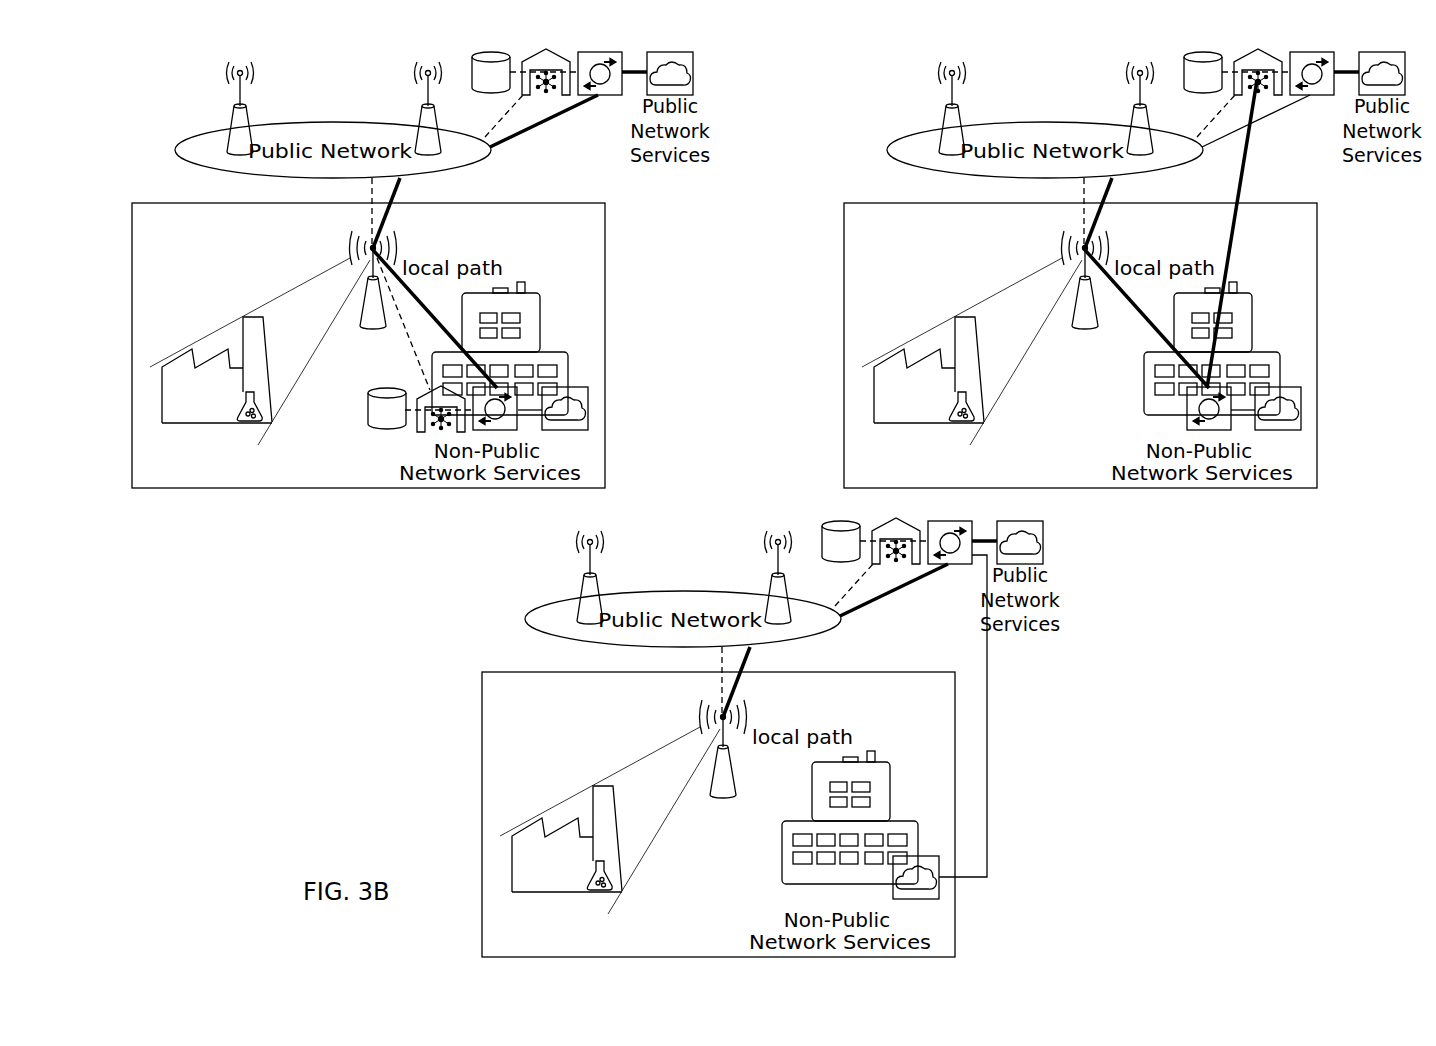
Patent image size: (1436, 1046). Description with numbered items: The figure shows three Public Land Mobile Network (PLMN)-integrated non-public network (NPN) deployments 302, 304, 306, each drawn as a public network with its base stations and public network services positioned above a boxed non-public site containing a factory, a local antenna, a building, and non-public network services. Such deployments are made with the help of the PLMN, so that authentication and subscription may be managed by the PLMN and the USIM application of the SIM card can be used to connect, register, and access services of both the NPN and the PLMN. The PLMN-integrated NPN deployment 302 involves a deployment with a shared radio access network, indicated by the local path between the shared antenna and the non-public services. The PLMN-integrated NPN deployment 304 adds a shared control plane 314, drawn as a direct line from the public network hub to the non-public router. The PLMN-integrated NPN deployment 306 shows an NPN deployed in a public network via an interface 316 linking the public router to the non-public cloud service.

The PLMN-integrated NPN deployment 302 is at (393, 266).
The PLMN-integrated NPN deployment 304 is at (1105, 266).
The PLMN-integrated NPN deployment 306 is at (743, 735).
The control plane 314 is at (1231, 243).
The interface 316 is at (986, 648).